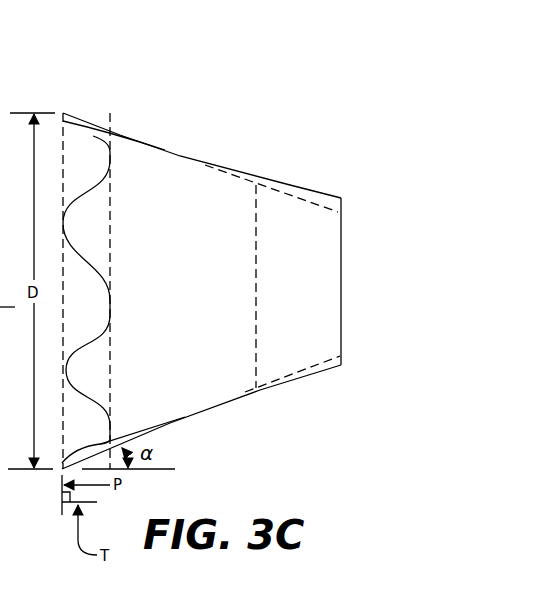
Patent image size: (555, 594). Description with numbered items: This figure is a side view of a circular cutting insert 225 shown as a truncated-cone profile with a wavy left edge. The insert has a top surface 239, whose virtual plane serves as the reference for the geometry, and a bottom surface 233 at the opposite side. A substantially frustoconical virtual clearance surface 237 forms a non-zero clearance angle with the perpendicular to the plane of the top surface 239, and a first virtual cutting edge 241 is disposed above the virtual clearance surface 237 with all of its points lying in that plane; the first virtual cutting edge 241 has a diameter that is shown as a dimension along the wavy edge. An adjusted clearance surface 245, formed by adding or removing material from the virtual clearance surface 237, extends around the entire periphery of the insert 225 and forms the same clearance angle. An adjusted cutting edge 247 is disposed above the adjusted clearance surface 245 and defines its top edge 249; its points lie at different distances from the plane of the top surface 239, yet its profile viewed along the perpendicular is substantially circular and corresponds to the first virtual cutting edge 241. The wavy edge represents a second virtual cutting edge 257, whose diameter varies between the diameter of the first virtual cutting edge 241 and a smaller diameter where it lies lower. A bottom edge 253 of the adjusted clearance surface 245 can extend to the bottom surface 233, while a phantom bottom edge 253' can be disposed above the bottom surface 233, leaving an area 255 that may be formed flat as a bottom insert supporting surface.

The cutting insert 225 is at (333, 153).
The bottom surface 233 is at (341, 222).
The virtual clearance surface 237 is at (84, 153).
The top surface 239 is at (82, 170).
The first virtual cutting edge 241 is at (62, 178).
The adjusted clearance surface 245 is at (288, 133).
The adjusted cutting edge 247 is at (93, 340).
The top edge 249 is at (90, 403).
The bottom edge 253 is at (311, 389).
The bottom edge 253' is at (288, 286).
The area 255 is at (292, 347).
The second virtual cutting edge 257 is at (100, 266).